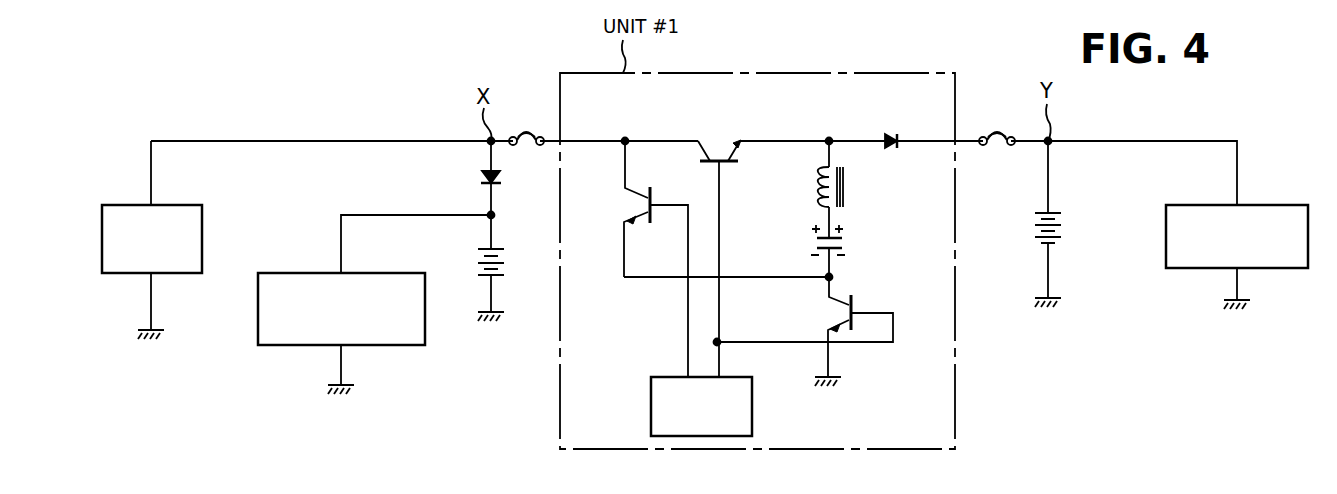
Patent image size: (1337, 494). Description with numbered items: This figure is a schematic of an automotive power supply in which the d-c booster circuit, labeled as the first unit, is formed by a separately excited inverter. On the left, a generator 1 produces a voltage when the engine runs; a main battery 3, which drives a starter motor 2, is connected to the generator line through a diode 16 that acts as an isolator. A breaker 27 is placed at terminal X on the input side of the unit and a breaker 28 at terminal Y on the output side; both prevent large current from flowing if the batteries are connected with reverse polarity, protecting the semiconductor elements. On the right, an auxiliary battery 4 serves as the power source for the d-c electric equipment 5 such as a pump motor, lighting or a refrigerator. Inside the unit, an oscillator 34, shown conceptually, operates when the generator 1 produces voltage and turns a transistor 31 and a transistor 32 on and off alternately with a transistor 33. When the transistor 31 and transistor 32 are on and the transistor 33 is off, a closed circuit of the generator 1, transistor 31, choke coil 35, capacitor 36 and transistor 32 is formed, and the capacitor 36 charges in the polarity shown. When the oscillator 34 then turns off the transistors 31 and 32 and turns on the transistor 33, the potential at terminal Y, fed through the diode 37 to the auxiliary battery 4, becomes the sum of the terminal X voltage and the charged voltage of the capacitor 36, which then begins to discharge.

The generator 1 is at (102, 237).
The starter motor 2 is at (291, 273).
The main battery 3 is at (478, 263).
The auxiliary battery 4 is at (1064, 227).
The d-c electric equipment 5 is at (1281, 205).
The diode 16 is at (483, 176).
The breaker 27 is at (526, 130).
The breaker 28 is at (1000, 130).
The transistor 31 is at (719, 155).
The transistor 32 is at (840, 311).
The transistor 33 is at (637, 206).
The oscillator 34 is at (754, 408).
The choke coil 35 is at (818, 192).
The capacitor 36 is at (846, 242).
The diode 37 is at (890, 150).